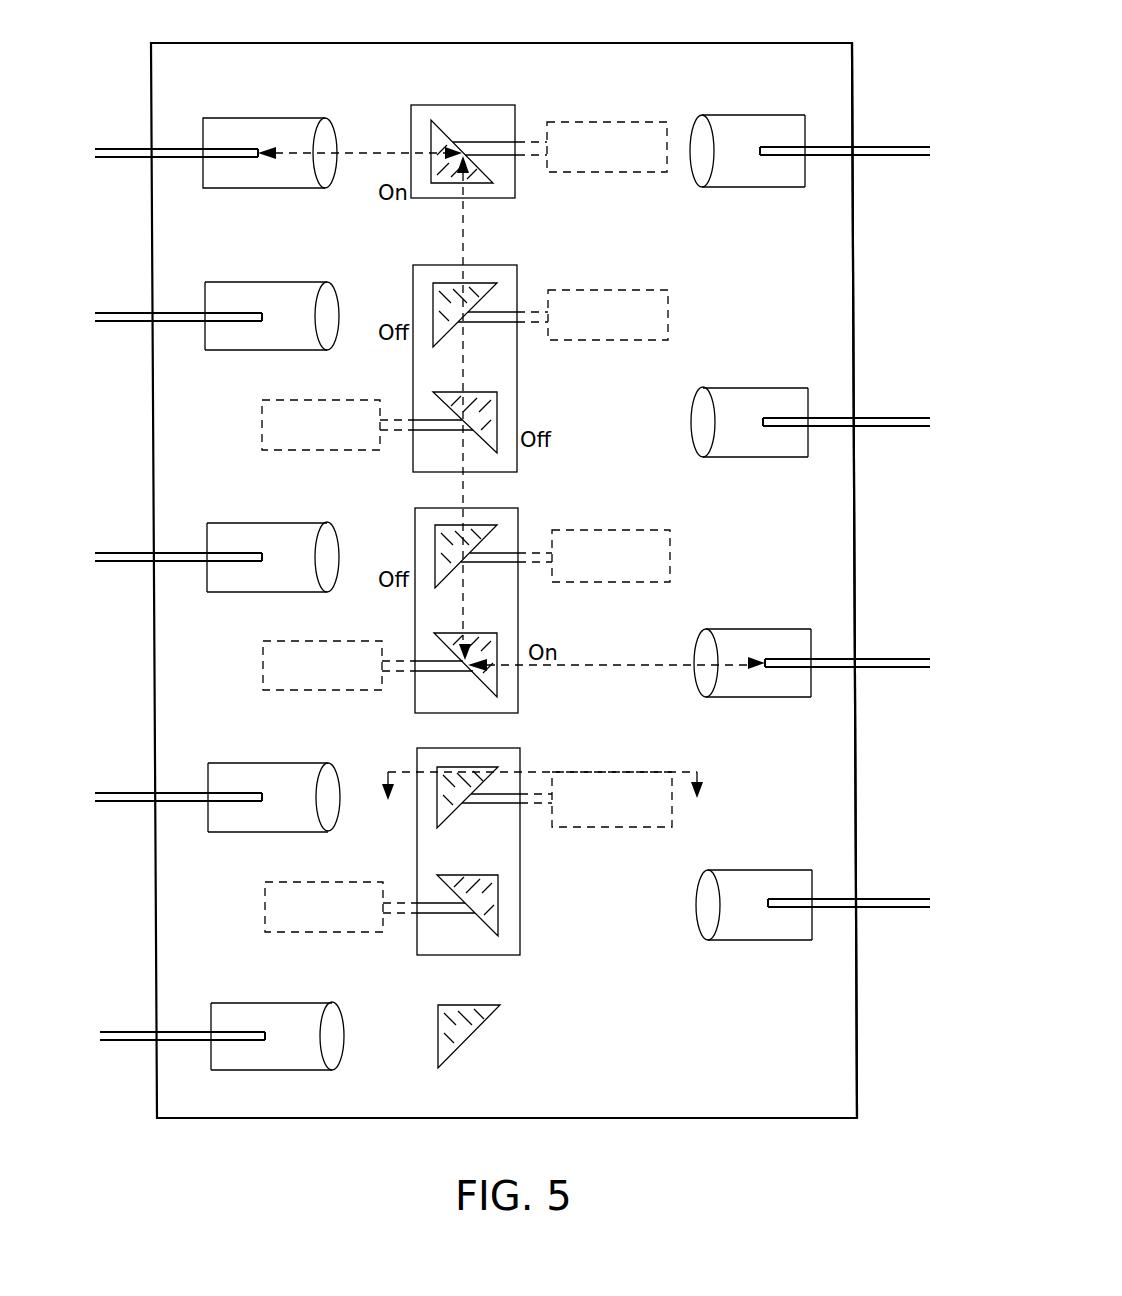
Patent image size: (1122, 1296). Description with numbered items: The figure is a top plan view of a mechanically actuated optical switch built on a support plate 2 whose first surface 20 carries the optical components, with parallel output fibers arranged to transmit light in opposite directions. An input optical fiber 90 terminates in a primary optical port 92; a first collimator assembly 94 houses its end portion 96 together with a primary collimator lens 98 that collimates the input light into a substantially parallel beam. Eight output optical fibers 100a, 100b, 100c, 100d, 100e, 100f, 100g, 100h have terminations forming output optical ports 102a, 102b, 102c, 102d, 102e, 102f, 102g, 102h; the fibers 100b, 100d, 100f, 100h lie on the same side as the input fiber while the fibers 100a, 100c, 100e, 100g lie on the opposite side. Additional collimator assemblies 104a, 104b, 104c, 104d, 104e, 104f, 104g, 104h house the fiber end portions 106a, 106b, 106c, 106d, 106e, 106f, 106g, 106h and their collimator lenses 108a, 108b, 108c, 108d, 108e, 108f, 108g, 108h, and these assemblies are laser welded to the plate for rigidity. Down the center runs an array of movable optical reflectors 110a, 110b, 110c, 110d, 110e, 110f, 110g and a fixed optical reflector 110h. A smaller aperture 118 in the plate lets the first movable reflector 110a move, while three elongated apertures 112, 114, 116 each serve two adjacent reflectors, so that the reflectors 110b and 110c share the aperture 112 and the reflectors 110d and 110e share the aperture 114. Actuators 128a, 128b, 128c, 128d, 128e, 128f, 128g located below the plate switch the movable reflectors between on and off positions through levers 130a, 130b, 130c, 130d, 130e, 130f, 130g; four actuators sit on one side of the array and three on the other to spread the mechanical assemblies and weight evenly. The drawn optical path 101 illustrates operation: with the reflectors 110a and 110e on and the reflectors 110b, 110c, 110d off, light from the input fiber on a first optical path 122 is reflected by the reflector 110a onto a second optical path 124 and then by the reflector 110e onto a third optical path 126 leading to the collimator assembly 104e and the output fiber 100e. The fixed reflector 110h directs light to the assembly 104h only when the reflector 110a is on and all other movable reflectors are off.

The support plate 2 is at (375, 62).
The first surface 20 is at (822, 537).
The input optical fiber 90 is at (112, 158).
The primary optical port 92 is at (262, 148).
The first collimator assembly 94 is at (225, 128).
The end portion 96 is at (244, 158).
The primary collimator lens 98 is at (332, 140).
The output optical fiber 100a is at (880, 146).
The output optical fiber 100b is at (120, 322).
The output optical fiber 100c is at (898, 418).
The output optical fiber 100d is at (120, 562).
The output optical fiber 100e is at (898, 658).
The output optical fiber 100f is at (120, 802).
The output optical fiber 100g is at (900, 898).
The output optical fiber 100h is at (120, 1042).
The light path 101 is at (544, 802).
The output optical port 102a is at (756, 150).
The output optical port 102b is at (265, 317).
The output optical port 102c is at (760, 422).
The output optical port 102d is at (265, 557).
The output optical port 102e is at (762, 668).
The output optical port 102f is at (265, 797).
The output optical port 102g is at (762, 905).
The output optical port 102h is at (272, 1042).
The collimator assembly 104a is at (762, 125).
The collimator assembly 104b is at (240, 290).
The collimator assembly 104c is at (735, 398).
The collimator assembly 104d is at (252, 532).
The collimator assembly 104e is at (738, 642).
The collimator assembly 104f is at (252, 775).
The collimator assembly 104g is at (748, 882).
The collimator assembly 104h is at (240, 1010).
The end portion 106a is at (790, 160).
The end portion 106b is at (232, 350).
The end portion 106c is at (790, 420).
The end portion 106d is at (240, 560).
The end portion 106e is at (790, 658).
The end portion 106f is at (232, 820).
The end portion 106g is at (792, 910).
The end portion 106h is at (228, 1042).
The collimator lens 108a is at (698, 140).
The collimator lens 108b is at (335, 305).
The collimator lens 108c is at (700, 420).
The collimator lens 108d is at (335, 548).
The collimator lens 108e is at (702, 660).
The collimator lens 108f is at (334, 785).
The collimator lens 108g is at (704, 905).
The collimator lens 108h is at (336, 1040).
The first movable optical reflector 110a is at (442, 184).
The movable optical reflector 110b is at (487, 287).
The movable optical reflector 110c is at (485, 400).
The movable optical reflector 110d is at (488, 528).
The movable optical reflector 110e is at (490, 680).
The movable optical reflector 110f is at (455, 822).
The movable optical reflector 110g is at (500, 915).
The fixed optical reflector 110h is at (478, 1035).
The elongated aperture 112 is at (505, 367).
The elongated aperture 114 is at (515, 625).
The elongated aperture 116 is at (522, 890).
The smaller aperture 118 is at (470, 108).
The first optical path 122 is at (355, 162).
The second optical path 124 is at (466, 230).
The third optical path 126 is at (622, 668).
The actuator 128a is at (610, 172).
The actuator 128b is at (670, 318).
The actuator 128c is at (322, 450).
The actuator 128d is at (630, 532).
The actuator 128e is at (322, 690).
The actuator 128f is at (612, 828).
The actuator 128g is at (324, 932).
The lever 130a is at (522, 158).
The lever 130b is at (525, 312).
The lever 130c is at (392, 420).
The lever 130d is at (527, 565).
The lever 130e is at (395, 660).
The lever 130f is at (528, 808).
The lever 130g is at (395, 900).